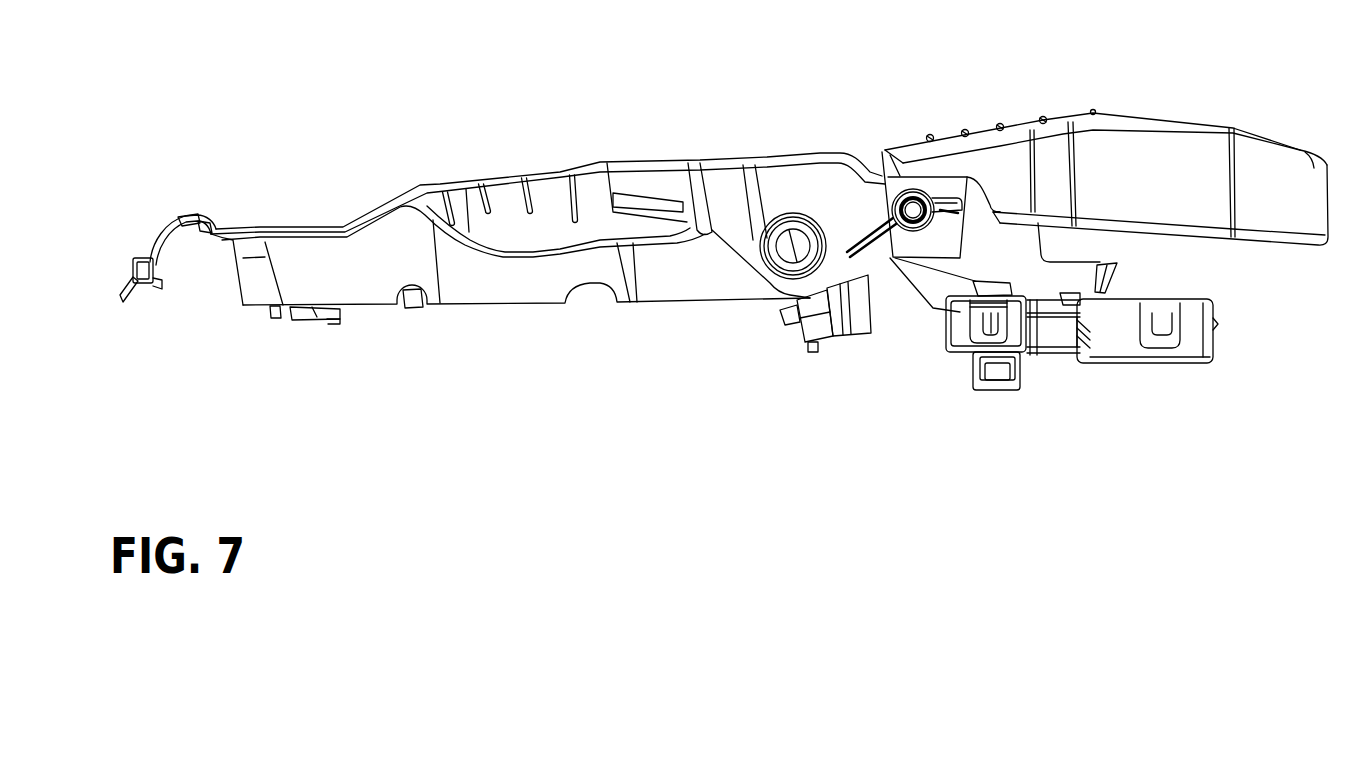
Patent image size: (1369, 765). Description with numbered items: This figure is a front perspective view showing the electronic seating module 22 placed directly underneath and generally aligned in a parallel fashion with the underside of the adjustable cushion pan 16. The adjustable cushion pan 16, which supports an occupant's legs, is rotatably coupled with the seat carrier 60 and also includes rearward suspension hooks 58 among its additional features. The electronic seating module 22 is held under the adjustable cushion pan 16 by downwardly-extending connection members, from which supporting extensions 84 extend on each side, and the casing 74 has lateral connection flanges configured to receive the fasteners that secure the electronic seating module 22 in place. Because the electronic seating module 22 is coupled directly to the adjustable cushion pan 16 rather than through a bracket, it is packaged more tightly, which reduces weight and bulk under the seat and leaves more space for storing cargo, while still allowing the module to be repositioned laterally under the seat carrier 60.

The rearward suspension hooks 58 is at (192, 212).
The seat carrier 60 is at (635, 189).
The adjustable cushion pan 16 is at (1198, 157).
The supporting extensions 84 is at (1115, 285).
The electronic seating module 22 is at (1113, 360).
The casing 74 is at (1190, 347).